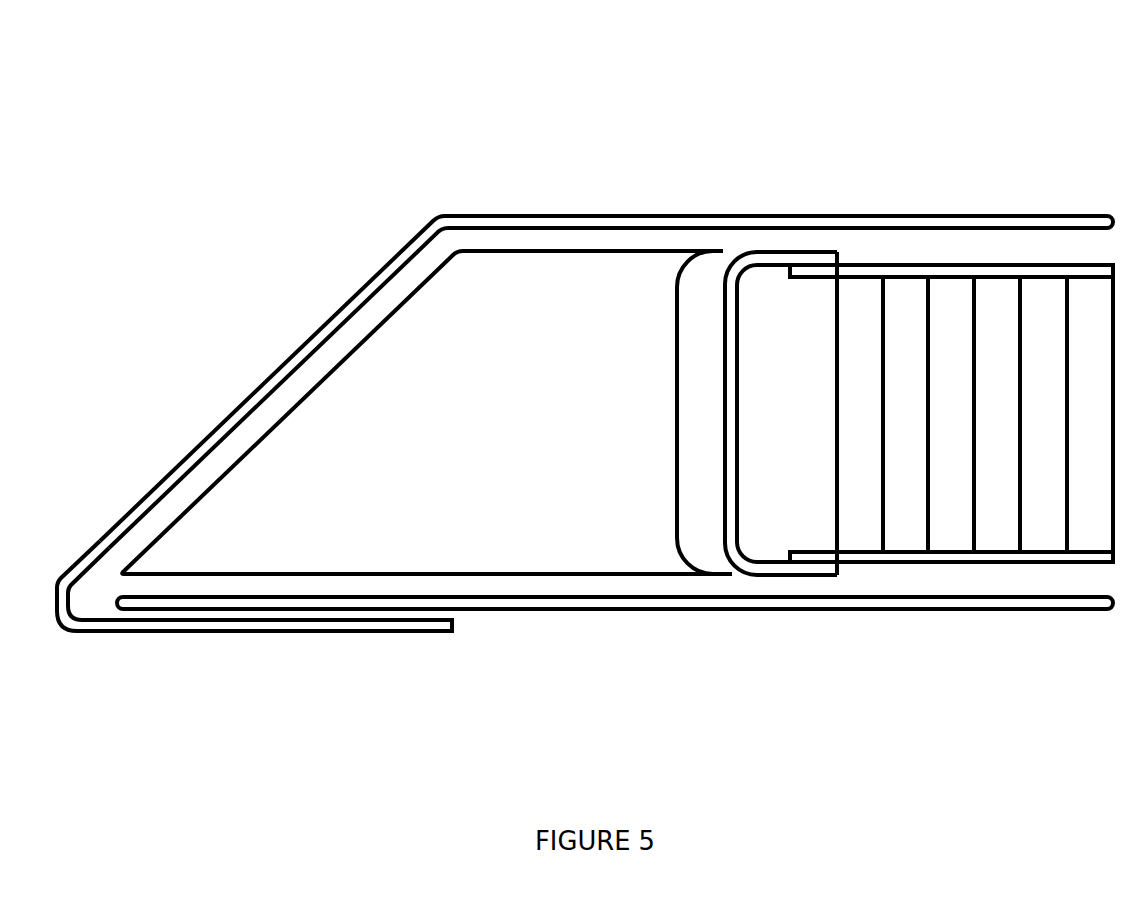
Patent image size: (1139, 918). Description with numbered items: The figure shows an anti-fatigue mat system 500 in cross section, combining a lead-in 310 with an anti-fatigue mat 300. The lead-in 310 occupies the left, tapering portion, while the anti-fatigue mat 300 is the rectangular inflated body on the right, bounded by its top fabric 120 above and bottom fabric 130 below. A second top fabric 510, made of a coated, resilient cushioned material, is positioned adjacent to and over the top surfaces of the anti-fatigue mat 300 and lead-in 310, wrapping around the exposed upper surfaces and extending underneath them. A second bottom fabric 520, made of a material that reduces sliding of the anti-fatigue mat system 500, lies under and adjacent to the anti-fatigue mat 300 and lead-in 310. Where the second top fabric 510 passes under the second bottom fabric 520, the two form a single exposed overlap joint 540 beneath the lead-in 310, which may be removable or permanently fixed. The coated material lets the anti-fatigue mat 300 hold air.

The anti-fatigue mat system 500 is at (160, 108).
The second top fabric 510 is at (553, 214).
The second bottom fabric 520 is at (595, 593).
The overlap joint 540 is at (185, 608).
The lead-in 310 is at (375, 415).
The anti-fatigue mat 300 is at (942, 343).
The top fabric 120 is at (1003, 263).
The bottom fabric 130 is at (975, 565).